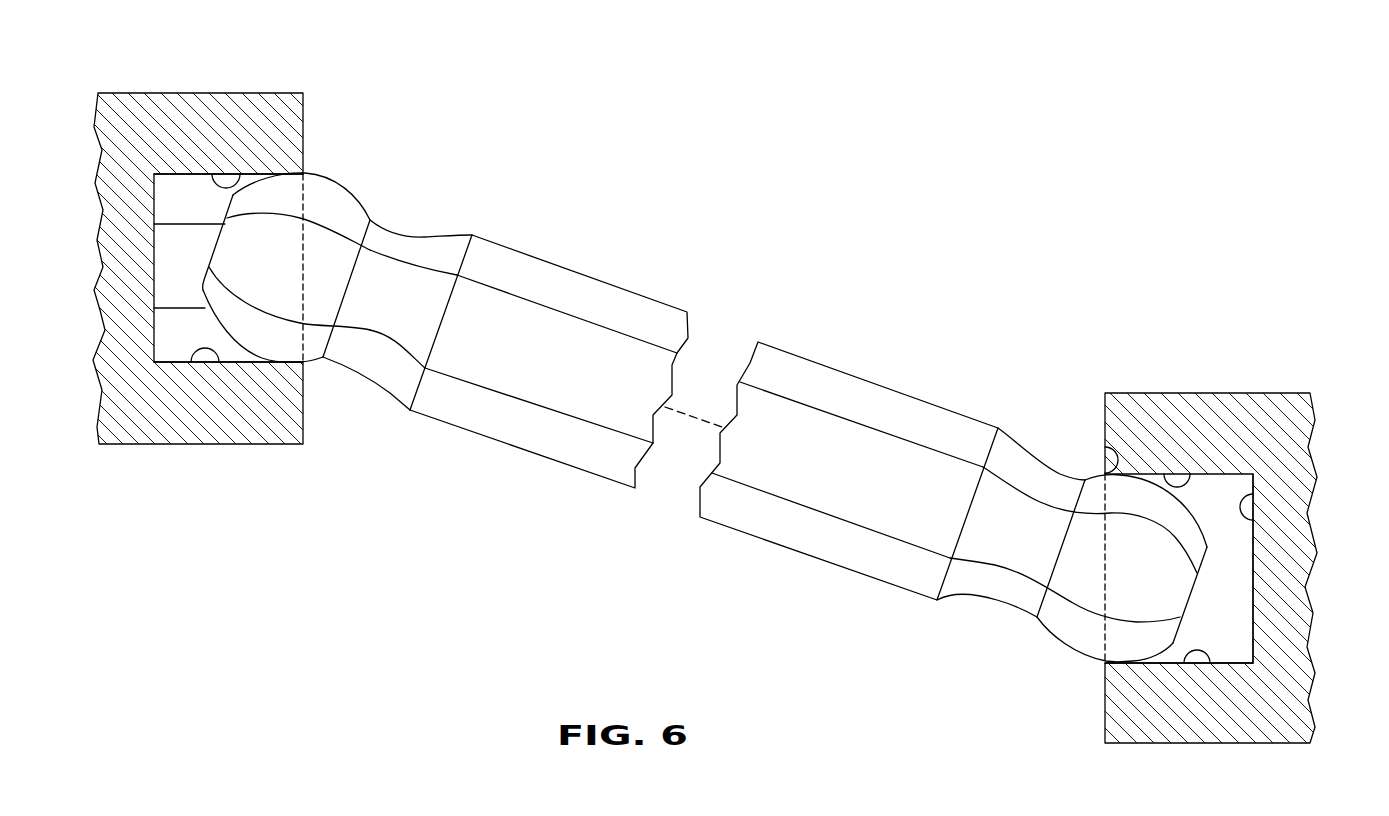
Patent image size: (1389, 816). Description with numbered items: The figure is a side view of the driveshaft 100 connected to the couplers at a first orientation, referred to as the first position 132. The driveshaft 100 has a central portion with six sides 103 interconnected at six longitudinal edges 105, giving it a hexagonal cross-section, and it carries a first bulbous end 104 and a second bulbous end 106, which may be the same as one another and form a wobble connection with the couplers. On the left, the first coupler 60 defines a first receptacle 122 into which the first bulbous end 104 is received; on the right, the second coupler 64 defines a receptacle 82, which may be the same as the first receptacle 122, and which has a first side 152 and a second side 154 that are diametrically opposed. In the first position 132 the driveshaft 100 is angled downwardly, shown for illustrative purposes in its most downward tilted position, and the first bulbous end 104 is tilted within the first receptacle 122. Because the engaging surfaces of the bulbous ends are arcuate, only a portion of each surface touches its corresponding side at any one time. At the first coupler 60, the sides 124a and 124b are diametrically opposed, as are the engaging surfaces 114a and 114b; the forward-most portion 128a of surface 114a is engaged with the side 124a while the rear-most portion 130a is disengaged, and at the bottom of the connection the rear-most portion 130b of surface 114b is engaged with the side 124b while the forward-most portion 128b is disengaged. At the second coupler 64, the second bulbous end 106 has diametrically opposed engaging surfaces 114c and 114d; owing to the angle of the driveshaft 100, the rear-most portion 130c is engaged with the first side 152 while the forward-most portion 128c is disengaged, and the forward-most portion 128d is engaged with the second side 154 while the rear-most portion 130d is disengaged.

The first coupler 60 is at (127, 118).
The second coupler 64 is at (1282, 683).
The receptacle 82 is at (1257, 517).
The driveshaft 100 is at (704, 421).
The sides 103 is at (582, 457).
The first bulbous end 104 is at (430, 80).
The longitudinal edges 105 is at (820, 543).
The second bulbous end 106 is at (1222, 457).
The engaging surface 114a is at (320, 175).
The engaging surface 114b is at (230, 345).
The engaging surface 114c is at (1180, 498).
The engaging surface 114d is at (1087, 660).
The first receptacle 122 is at (200, 342).
The side 124a is at (212, 173).
The side 124b is at (190, 362).
The forward-most portion 128a is at (292, 173).
The forward-most portion 128b is at (213, 320).
The forward-most portion 128c is at (1207, 537).
The forward-most portion 128d is at (1118, 665).
The rear-most portion 130a is at (352, 196).
The rear-most portion 130b is at (283, 363).
The rear-most portion 130c is at (1105, 445).
The rear-most portion 130d is at (1053, 643).
The first position 132 is at (538, 138).
The first side 152 is at (1163, 473).
The second side 154 is at (1213, 663).